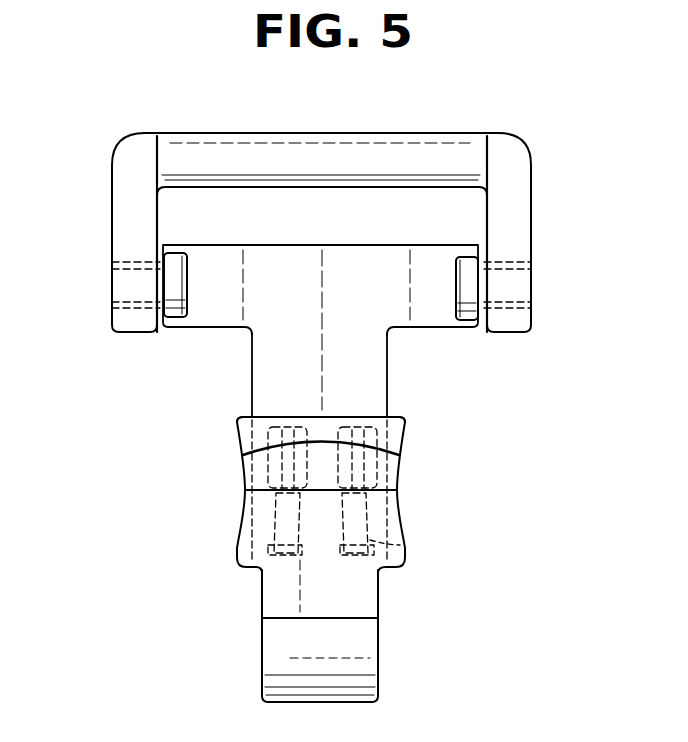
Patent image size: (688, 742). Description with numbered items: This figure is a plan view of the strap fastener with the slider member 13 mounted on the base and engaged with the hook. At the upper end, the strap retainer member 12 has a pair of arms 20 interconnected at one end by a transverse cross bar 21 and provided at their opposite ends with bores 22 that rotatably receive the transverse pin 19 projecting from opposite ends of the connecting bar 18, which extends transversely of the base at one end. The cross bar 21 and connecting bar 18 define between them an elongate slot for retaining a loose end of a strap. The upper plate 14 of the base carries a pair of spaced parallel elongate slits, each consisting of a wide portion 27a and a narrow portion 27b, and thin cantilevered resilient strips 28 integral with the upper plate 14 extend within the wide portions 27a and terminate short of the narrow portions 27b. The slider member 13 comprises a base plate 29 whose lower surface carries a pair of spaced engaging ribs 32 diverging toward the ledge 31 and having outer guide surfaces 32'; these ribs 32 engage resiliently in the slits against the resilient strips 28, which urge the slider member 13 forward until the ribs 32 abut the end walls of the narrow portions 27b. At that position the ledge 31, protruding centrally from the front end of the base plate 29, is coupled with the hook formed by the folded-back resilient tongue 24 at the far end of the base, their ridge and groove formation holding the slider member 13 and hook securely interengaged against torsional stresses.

The strap retainer member 12 is at (410, 131).
The transverse cross bar 21 is at (270, 132).
The arms 20 is at (112, 188).
The bores 22 is at (113, 268).
The transverse pin 19 is at (112, 287).
The connecting bar 18 is at (301, 245).
The upper plate 14 is at (388, 355).
The slider member 13 is at (407, 416).
The base plate 29 is at (238, 416).
The cantilevered resilient strips 28 is at (243, 440).
The wide portion 27a is at (266, 465).
The narrow portion 27b is at (276, 510).
The engaging ribs 32 is at (323, 570).
The outer guide surfaces 32' is at (421, 548).
The ledge 31 is at (268, 600).
The resilient tongue 24 is at (268, 658).